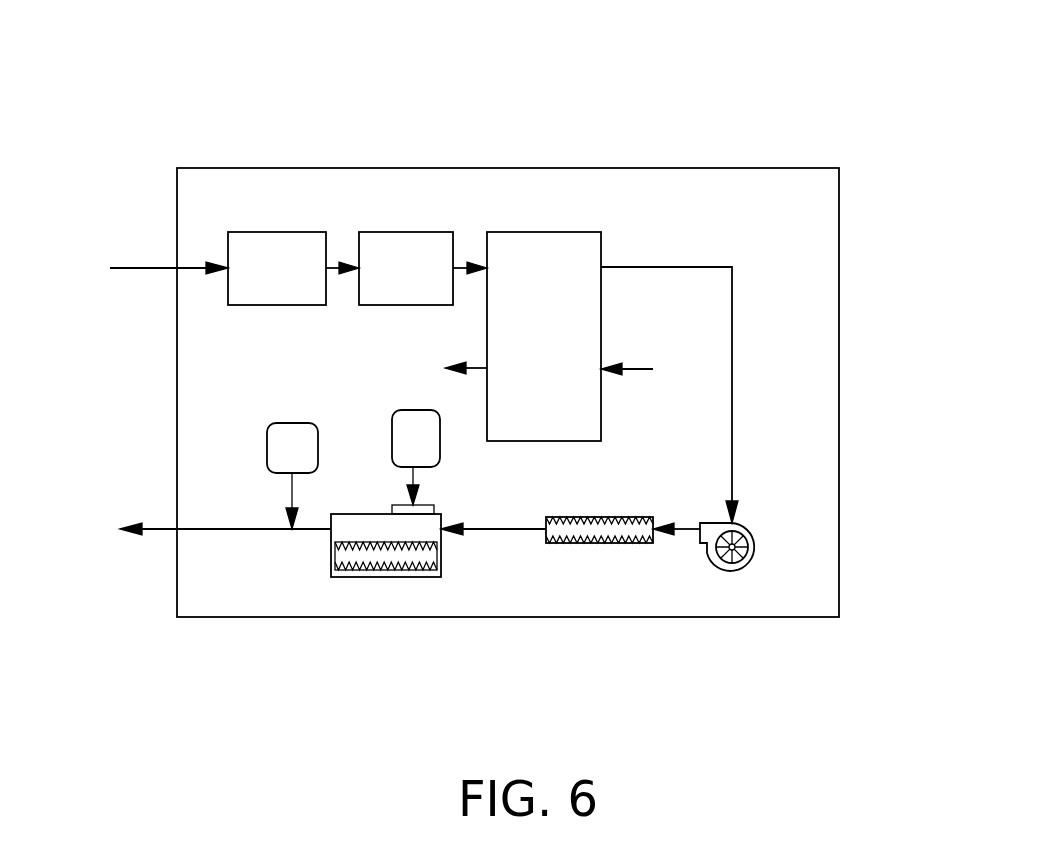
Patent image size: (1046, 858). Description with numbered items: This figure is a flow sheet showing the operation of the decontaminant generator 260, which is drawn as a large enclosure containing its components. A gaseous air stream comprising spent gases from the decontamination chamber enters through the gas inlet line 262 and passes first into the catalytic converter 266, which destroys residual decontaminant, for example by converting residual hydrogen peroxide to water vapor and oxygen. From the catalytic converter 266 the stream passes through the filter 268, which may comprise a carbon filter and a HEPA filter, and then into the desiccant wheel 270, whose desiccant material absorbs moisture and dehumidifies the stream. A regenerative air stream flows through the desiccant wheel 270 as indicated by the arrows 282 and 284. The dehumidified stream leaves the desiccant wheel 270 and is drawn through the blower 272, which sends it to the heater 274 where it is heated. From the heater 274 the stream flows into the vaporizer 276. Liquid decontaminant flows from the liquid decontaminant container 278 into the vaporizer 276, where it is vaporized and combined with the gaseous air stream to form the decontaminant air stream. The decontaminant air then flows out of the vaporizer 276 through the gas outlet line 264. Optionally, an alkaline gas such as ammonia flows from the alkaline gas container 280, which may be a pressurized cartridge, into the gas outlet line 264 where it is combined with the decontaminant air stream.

The decontaminant generator 260 is at (548, 88).
The gas inlet line 262 is at (148, 267).
The gas outlet line 264 is at (197, 529).
The catalytic converter 266 is at (266, 232).
The filter 268 is at (411, 232).
The desiccant wheel 270 is at (555, 232).
The blower 272 is at (757, 541).
The heater 274 is at (597, 517).
The vaporizer 276 is at (390, 577).
The liquid decontaminant container 278 is at (408, 410).
The alkaline gas container 280 is at (307, 385).
The arrow indicating regenerative air stream 282 is at (655, 343).
The arrow indicating regenerative air stream 284 is at (468, 362).